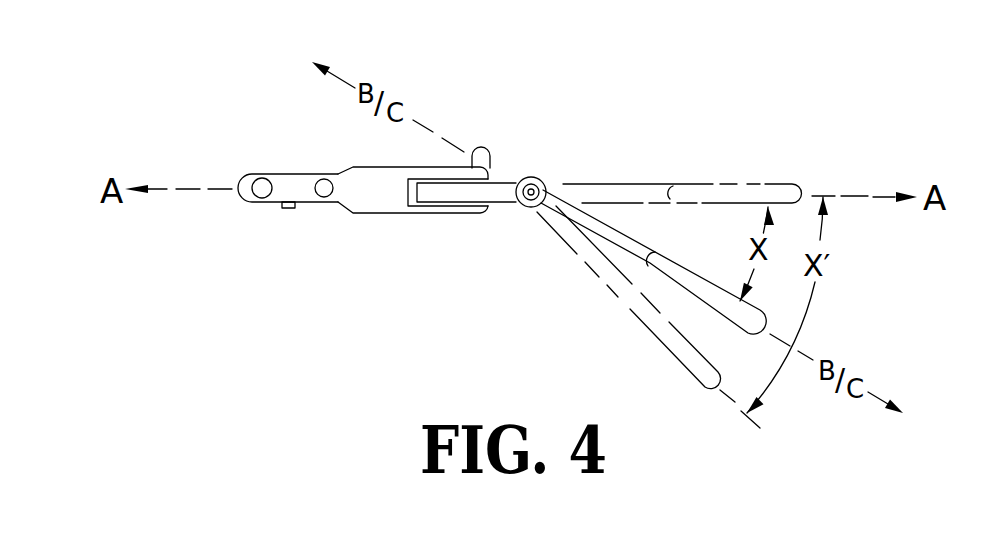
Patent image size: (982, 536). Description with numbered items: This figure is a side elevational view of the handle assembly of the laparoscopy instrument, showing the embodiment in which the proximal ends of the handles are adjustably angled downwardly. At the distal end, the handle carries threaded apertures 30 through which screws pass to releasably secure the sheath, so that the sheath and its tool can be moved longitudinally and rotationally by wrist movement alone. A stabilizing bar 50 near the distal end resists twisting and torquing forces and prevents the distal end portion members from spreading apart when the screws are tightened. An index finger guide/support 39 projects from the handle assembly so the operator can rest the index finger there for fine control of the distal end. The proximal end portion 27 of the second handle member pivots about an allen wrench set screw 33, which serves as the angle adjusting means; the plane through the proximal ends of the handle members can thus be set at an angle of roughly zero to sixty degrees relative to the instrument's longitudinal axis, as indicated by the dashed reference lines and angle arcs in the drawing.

The proximal end portion 27 is at (595, 232).
The threaded apertures 30 is at (260, 193).
The allen wrench set screw 33 is at (542, 182).
The index finger guide/support 39 is at (484, 148).
The stabilizing bar 50 is at (288, 208).